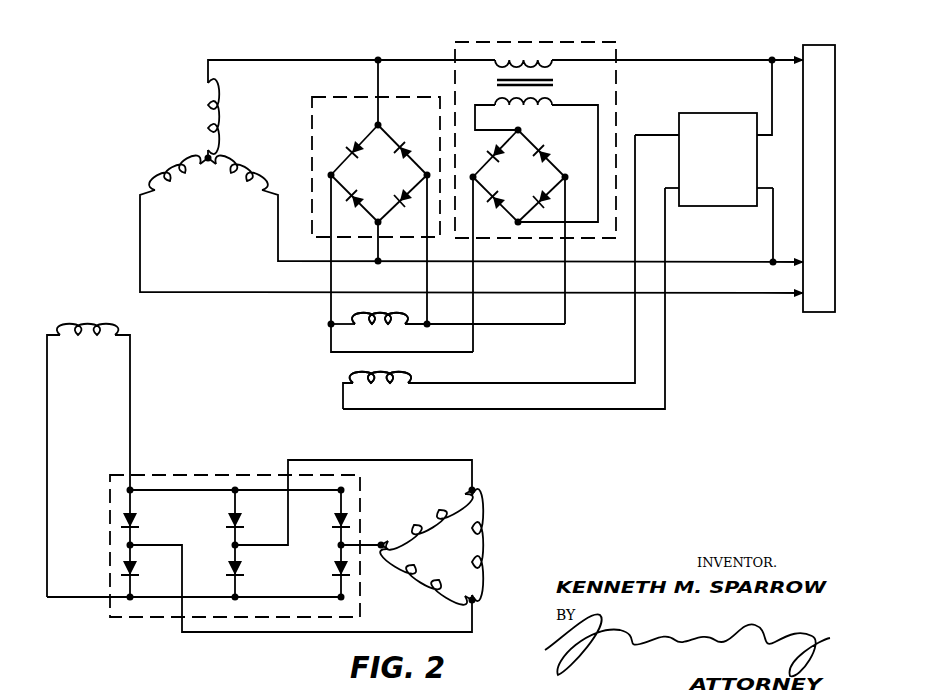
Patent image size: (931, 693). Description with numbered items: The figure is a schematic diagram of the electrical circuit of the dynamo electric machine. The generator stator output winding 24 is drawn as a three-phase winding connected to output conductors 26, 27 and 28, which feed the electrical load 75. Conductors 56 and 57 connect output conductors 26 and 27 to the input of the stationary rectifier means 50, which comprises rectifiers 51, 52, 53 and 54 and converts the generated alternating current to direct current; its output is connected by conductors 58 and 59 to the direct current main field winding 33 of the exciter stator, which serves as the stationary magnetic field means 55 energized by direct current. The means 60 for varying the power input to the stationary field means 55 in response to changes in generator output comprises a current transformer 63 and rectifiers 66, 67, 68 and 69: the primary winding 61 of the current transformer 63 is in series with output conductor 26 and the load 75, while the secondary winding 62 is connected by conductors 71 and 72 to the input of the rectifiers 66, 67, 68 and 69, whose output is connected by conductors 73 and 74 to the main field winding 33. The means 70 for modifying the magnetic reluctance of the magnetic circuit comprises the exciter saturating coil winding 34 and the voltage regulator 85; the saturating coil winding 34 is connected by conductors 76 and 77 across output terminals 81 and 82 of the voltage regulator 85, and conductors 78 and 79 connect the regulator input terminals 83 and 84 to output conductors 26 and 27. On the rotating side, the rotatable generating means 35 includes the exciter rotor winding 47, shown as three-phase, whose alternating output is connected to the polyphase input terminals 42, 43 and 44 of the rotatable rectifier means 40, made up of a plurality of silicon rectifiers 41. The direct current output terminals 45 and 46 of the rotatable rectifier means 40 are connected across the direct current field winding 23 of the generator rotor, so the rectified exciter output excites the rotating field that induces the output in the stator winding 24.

The direct current field winding 23 is at (88, 325).
The stator output winding 24 is at (165, 175).
The output conductor 26 is at (268, 60).
The output conductor 27 is at (278, 230).
The output conductor 28 is at (140, 222).
The main field winding 33 is at (345, 322).
The saturating coil winding 34 is at (355, 380).
The rotatable generating means 35 is at (480, 543).
The rotatable rectifier means 40 is at (215, 475).
The rectifiers 41 is at (345, 510).
The alternating current input terminal 42 is at (130, 545).
The alternating current input terminal 43 is at (235, 545).
The alternating current input terminal 44 is at (341, 548).
The direct current output terminal 45 is at (128, 600).
The direct current output terminal 46 is at (130, 490).
The exciter rotor winding 47 is at (485, 520).
The stationary rectifier means 50 is at (312, 115).
The rectifier 51 is at (355, 145).
The rectifier 52 is at (403, 145).
The rectifier 53 is at (345, 205).
The rectifier 54 is at (403, 190).
The stationary magnetic field means 55 is at (398, 332).
The conductor 56 is at (378, 60).
The conductor 57 is at (378, 248).
The conductor 58 is at (327, 280).
The conductor 59 is at (423, 278).
The power varying means 60 is at (620, 45).
The primary winding 61 is at (553, 68).
The secondary winding 62 is at (540, 105).
The current transformer 63 is at (495, 82).
The rectifier 66 is at (497, 150).
The rectifier 67 is at (545, 150).
The rectifier 68 is at (548, 195).
The rectifier 69 is at (487, 205).
The reluctance modifying means 70 is at (412, 374).
The conductor 71 is at (478, 120).
The conductor 72 is at (598, 160).
The conductor 73 is at (473, 278).
The conductor 74 is at (568, 255).
The electrical load 75 is at (820, 315).
The conductor 76 is at (635, 338).
The conductor 77 is at (665, 338).
The conductor 78 is at (772, 78).
The conductor 79 is at (773, 232).
The output terminal 81 is at (679, 135).
The output terminal 82 is at (679, 188).
The input terminal 83 is at (760, 135).
The input terminal 84 is at (757, 188).
The voltage regulator 85 is at (705, 113).